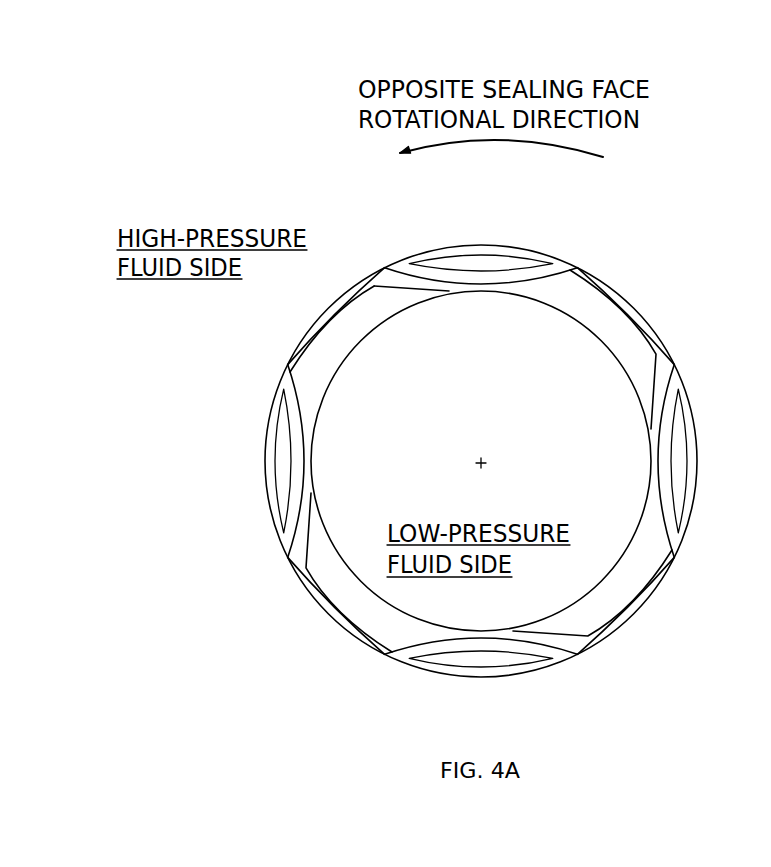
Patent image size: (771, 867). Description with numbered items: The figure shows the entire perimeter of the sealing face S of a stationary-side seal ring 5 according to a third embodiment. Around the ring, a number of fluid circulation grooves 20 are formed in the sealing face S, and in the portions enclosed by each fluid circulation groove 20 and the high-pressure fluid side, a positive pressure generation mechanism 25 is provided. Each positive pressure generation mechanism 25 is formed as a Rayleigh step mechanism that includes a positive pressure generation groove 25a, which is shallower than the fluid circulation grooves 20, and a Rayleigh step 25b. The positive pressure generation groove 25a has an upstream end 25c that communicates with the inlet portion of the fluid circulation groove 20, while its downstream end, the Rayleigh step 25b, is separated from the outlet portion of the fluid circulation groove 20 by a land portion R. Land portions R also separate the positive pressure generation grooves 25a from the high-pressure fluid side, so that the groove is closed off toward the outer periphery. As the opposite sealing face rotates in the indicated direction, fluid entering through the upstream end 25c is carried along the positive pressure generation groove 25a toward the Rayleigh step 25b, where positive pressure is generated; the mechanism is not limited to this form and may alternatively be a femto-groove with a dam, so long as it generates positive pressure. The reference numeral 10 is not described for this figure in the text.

The stationary-side seal ring 5 is at (342, 296).
The fluid circulation groove 10 is at (605, 297).
The fluid circulation groove 20 is at (537, 262).
The positive pressure generation mechanism 25 is at (488, 252).
The positive pressure generation groove 25a is at (508, 270).
The Rayleigh step 25b is at (470, 278).
The upstream end 25c is at (520, 268).
The land portion R is at (425, 280).
The sealing face S is at (660, 377).